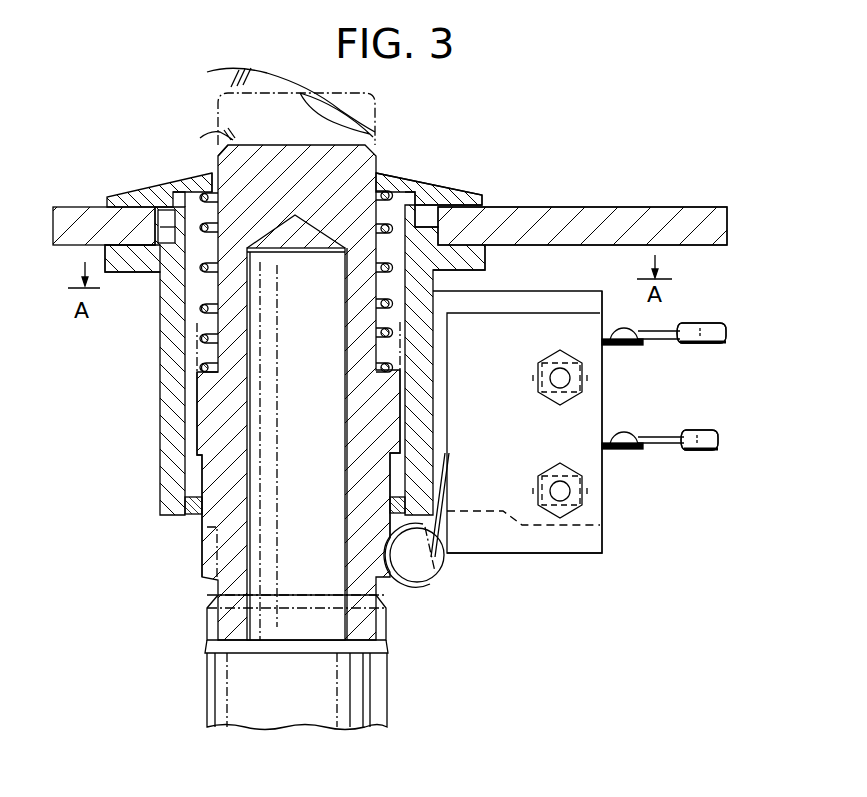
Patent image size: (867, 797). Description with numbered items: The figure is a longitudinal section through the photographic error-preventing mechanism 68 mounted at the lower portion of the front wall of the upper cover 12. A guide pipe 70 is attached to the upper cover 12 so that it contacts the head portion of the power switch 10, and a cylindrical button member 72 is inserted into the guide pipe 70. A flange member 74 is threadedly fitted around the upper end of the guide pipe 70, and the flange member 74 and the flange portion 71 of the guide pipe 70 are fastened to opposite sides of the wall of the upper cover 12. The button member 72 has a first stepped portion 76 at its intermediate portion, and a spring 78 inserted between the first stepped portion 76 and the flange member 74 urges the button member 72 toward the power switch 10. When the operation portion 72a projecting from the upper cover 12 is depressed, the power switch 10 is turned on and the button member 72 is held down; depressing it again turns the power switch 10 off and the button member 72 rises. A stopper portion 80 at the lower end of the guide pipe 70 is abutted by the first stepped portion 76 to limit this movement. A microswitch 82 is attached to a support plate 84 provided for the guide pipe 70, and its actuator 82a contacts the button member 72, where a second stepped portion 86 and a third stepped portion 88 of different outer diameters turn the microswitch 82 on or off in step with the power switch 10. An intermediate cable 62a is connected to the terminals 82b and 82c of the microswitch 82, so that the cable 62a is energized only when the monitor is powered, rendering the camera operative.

The power switch 10 is at (387, 677).
The upper cover 12 is at (628, 206).
The intermediate cable 62a is at (702, 323).
The photographic error-preventing mechanism 68 is at (515, 185).
The guide pipe 70 is at (167, 330).
The flange portion 71 is at (150, 265).
The button member 72 is at (380, 140).
The operation portion 72a is at (213, 158).
The flange member 74 is at (448, 185).
The first stepped portion 76 is at (203, 398).
The spring 78 is at (207, 367).
The stopper portion 80 is at (188, 508).
The microswitch 82 is at (547, 555).
The actuator 82a is at (442, 570).
The terminal 82b is at (622, 345).
The terminal 82c is at (625, 450).
The support plate 84 is at (563, 291).
The second stepped portion 86 is at (385, 463).
The third stepped portion 88 is at (378, 620).